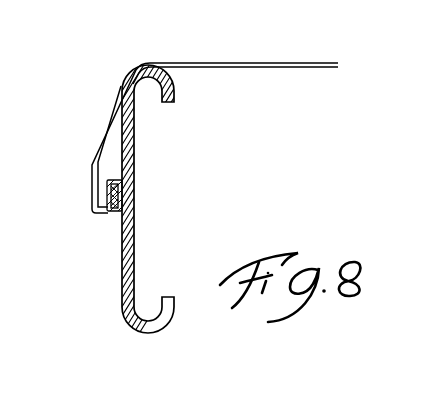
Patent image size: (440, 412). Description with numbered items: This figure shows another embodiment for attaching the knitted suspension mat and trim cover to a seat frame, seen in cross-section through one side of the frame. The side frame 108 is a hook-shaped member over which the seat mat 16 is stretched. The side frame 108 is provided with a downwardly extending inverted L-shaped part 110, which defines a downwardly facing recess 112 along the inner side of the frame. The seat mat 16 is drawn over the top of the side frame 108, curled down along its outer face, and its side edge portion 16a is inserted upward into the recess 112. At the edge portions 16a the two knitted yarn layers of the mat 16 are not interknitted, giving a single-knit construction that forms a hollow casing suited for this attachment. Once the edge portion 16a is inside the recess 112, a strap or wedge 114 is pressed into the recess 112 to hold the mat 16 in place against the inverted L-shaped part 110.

The seat mat 16 is at (261, 56).
The side edge portions 16a is at (102, 171).
The side frame 108 is at (134, 243).
The inverted L-shaped part 110 is at (123, 143).
The downwardly facing recess 112 is at (113, 191).
The strap or wedge 114 is at (110, 213).